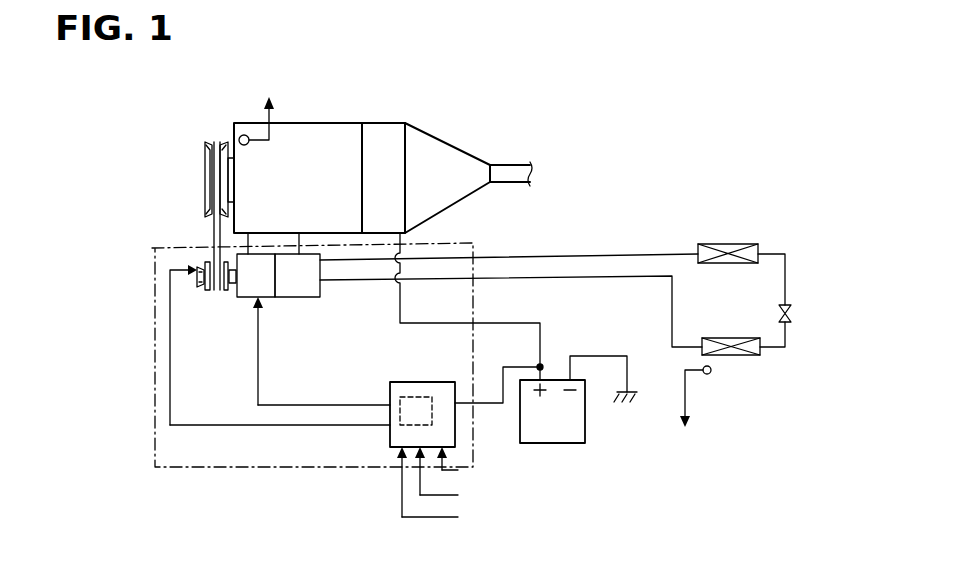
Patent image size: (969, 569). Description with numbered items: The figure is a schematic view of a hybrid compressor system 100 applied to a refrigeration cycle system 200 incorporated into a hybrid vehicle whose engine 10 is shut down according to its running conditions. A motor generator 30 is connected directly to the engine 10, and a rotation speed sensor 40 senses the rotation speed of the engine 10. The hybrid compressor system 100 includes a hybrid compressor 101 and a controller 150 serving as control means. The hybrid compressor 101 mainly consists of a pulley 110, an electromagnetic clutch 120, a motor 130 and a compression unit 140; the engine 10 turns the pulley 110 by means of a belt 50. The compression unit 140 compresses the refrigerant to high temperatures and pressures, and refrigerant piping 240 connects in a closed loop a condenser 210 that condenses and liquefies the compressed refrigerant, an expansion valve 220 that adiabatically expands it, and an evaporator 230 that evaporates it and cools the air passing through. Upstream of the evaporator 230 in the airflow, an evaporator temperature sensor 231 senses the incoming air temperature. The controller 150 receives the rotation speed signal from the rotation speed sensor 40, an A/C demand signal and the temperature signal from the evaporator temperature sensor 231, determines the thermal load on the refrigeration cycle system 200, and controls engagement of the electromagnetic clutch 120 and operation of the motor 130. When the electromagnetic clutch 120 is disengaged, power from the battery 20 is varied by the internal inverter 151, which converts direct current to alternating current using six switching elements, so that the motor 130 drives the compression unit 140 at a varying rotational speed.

The vehicle engine 10 is at (307, 140).
The battery 20 is at (570, 444).
The motor generator 30 is at (378, 138).
The rotation speed sensor 40 is at (243, 135).
The belt 50 is at (217, 233).
The hybrid compressor system 100 is at (152, 279).
The hybrid compressor 101 is at (262, 321).
The pulley 110 is at (229, 298).
The electromagnetic clutch 120 is at (200, 288).
The motor 130 is at (266, 292).
The compression unit 140 is at (300, 292).
The controller 150 is at (415, 381).
The inverter 151 is at (401, 394).
The refrigeration cycle system 200 is at (582, 317).
The condenser 210 is at (723, 244).
The expansion valve 220 is at (791, 310).
The evaporator 230 is at (748, 356).
The evaporator temperature sensor 231 is at (710, 375).
The refrigerant piping 240 is at (603, 256).